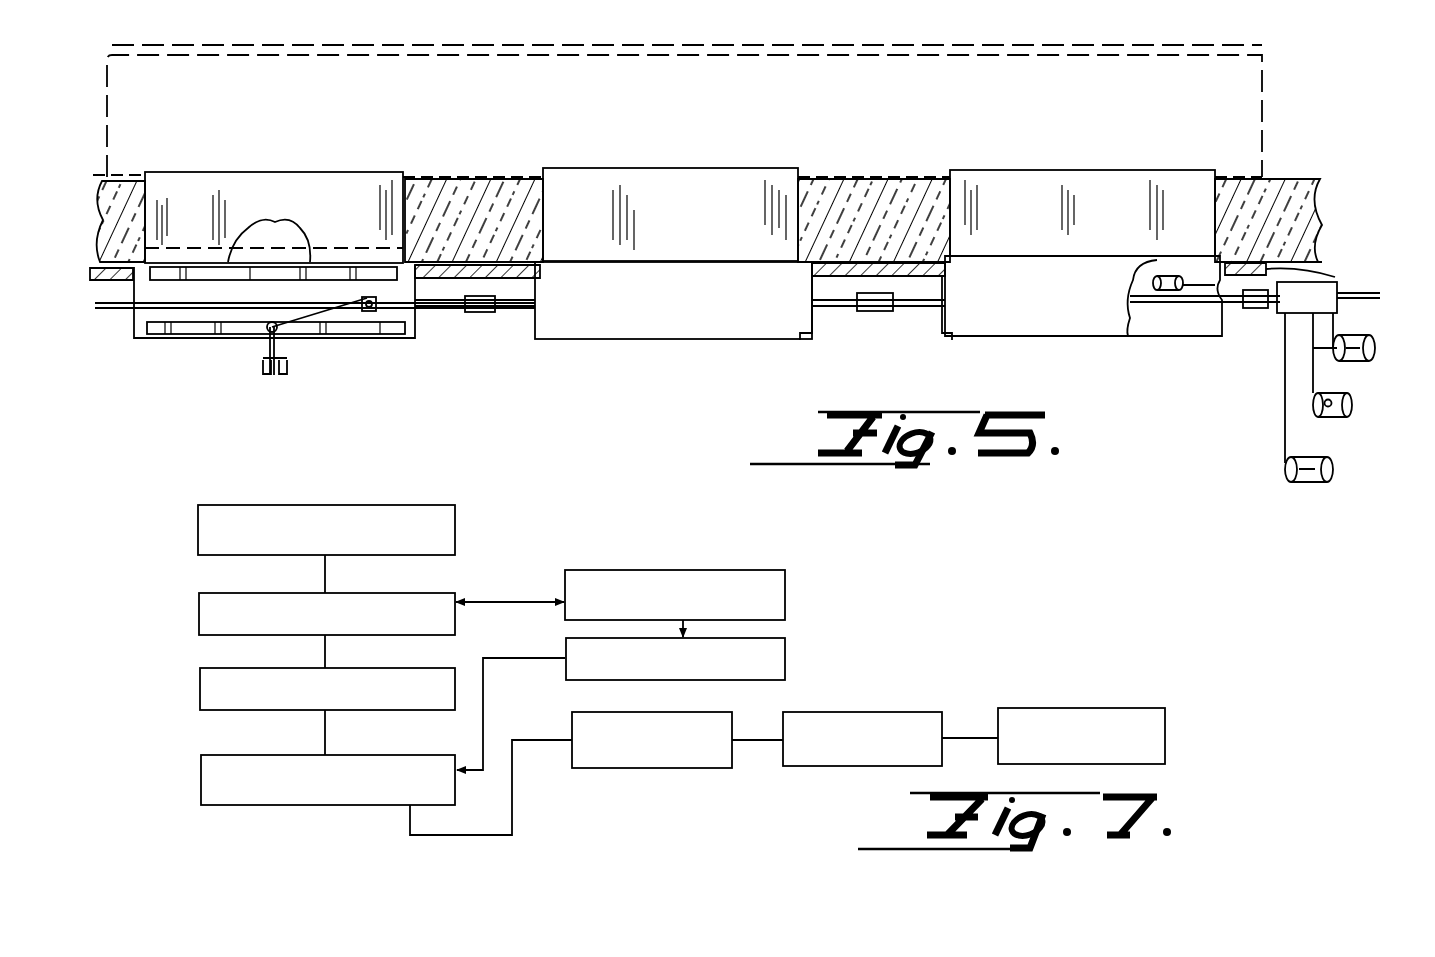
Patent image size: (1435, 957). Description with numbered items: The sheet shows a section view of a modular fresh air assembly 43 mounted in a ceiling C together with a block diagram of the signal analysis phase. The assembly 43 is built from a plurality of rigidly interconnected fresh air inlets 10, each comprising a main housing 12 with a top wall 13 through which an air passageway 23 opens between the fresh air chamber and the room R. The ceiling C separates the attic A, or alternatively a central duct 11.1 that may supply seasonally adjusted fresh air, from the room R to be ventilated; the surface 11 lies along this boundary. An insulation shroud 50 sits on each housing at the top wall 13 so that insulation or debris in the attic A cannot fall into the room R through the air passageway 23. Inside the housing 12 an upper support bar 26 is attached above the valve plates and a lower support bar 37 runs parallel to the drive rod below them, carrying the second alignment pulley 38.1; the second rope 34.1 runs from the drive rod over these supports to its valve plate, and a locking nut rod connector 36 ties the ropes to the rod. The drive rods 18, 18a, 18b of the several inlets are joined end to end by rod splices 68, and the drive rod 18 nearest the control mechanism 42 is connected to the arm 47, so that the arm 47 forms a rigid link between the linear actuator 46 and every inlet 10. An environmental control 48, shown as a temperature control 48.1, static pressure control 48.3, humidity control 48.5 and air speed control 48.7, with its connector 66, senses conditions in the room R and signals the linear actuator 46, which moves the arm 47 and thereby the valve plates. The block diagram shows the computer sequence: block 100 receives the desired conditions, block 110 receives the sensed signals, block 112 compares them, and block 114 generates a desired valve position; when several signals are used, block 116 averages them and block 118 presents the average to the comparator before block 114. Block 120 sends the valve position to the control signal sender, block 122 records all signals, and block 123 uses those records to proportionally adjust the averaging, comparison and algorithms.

In FIG. 5, the fresh air inlet 10 is at (213, 356).
In FIG. 5, the ground surface 11 is at (1318, 266).
In FIG. 5, the central duct 11.1 is at (1128, 97).
In FIG. 5, the main housing 12 is at (130, 320).
In FIG. 5, the top wall 13 is at (545, 262).
In FIG. 5, the drive rod 18 is at (925, 312).
In FIG. 5, the drive rod 18a is at (840, 312).
In FIG. 5, the drive rod 18b is at (458, 315).
In FIG. 5, the air passageway 23 is at (243, 312).
In FIG. 5, the upper support bar 26 is at (272, 218).
In FIG. 5, the second rope 34.1 is at (328, 305).
In FIG. 5, the locking nut rod connector 36 is at (378, 312).
In FIG. 5, the lower support bar 37 is at (350, 330).
In FIG. 5, the second alignment pulley 38.1 is at (276, 332).
In FIG. 5, the control mechanism 42 is at (1380, 278).
In FIG. 5, the modular fresh air assembly 43 is at (653, 160).
In FIG. 5, the linear actuator 46 is at (1295, 300).
In FIG. 5, the arm 47 is at (1365, 300).
In FIG. 5, the environmental control 48 is at (1360, 413).
In FIG. 5, the temperature control 48.1 is at (1372, 350).
In FIG. 5, the static pressure control 48.3 is at (1349, 404).
In FIG. 5, the humidity control 48.5 is at (1310, 470).
In FIG. 5, the air speed control 48.7 is at (1172, 276).
In FIG. 5, the insulation shroud 50 is at (370, 195).
In FIG. 5, the connector 66 is at (1330, 400).
In FIG. 5, the rod splice 68 is at (485, 313).
In FIG. 5, the attic A is at (882, 226).
In FIG. 5, the ceiling C is at (905, 258).
In FIG. 5, the room R is at (1006, 389).
In FIG. 7, the block 100 is at (438, 505).
In FIG. 7, the block 110 is at (440, 593).
In FIG. 7, the block 112 is at (428, 668).
In FIG. 7, the block 114 is at (382, 755).
In FIG. 7, the block 116 is at (752, 570).
In FIG. 7, the block 118 is at (788, 658).
In FIG. 7, the block 120 is at (622, 768).
In FIG. 7, the block 122 is at (876, 712).
In FIG. 7, the block 123 is at (1063, 708).